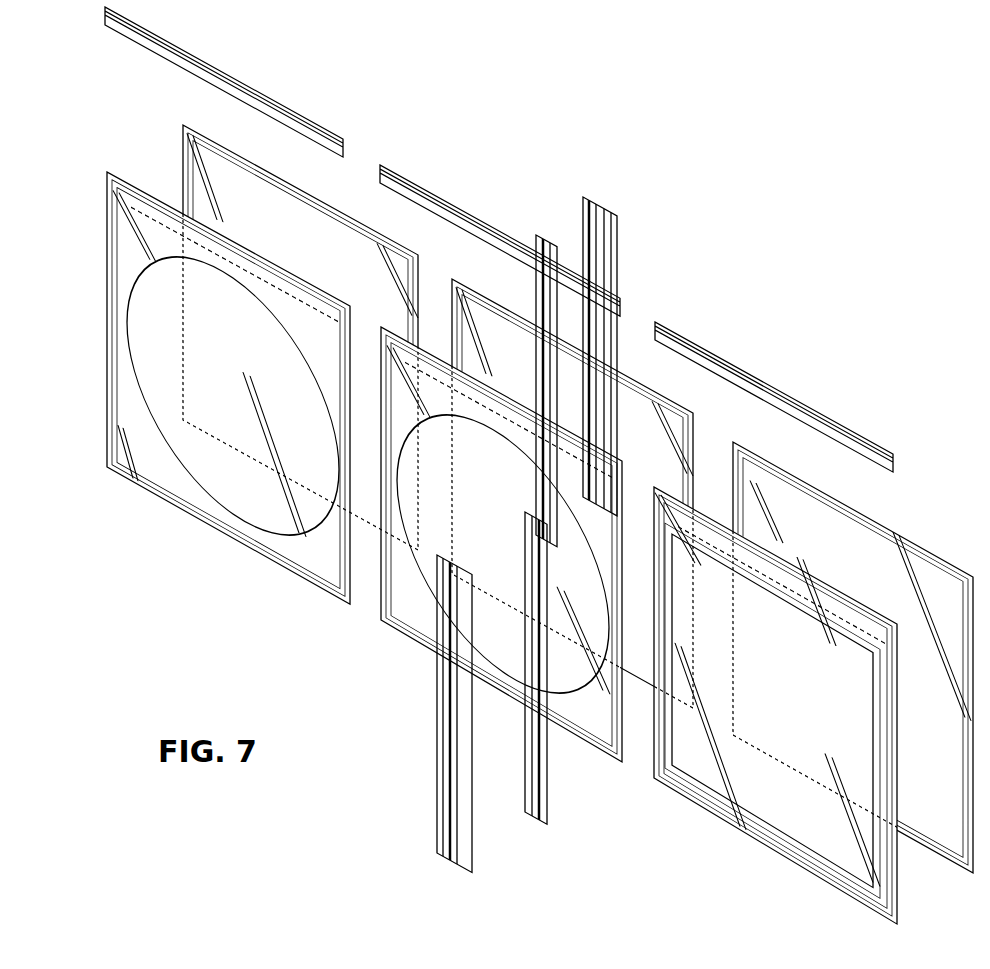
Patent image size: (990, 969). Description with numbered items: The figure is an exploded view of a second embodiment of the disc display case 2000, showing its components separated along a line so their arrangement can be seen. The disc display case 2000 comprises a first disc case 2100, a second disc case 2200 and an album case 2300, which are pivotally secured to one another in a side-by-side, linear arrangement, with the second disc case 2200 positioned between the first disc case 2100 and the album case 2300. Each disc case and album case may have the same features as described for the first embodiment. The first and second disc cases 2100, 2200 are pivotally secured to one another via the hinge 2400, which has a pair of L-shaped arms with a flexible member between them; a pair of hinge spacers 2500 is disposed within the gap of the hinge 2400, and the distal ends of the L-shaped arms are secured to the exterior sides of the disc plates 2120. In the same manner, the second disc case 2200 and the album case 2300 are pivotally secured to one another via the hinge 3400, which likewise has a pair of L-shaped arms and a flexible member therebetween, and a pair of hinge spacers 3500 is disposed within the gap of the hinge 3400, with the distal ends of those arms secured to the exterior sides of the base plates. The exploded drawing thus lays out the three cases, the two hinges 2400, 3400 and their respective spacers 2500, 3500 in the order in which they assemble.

The disc display case 2000 is at (857, 224).
The first disc case 2100 is at (118, 478).
The disc plate 2120 is at (108, 295).
The second disc case 2200 is at (400, 648).
The album case 2300 is at (665, 793).
The hinge 2400 is at (590, 195).
The hinge spacers 2500 is at (538, 235).
The hinge 3400 is at (440, 853).
The hinge spacers 3500 is at (543, 815).